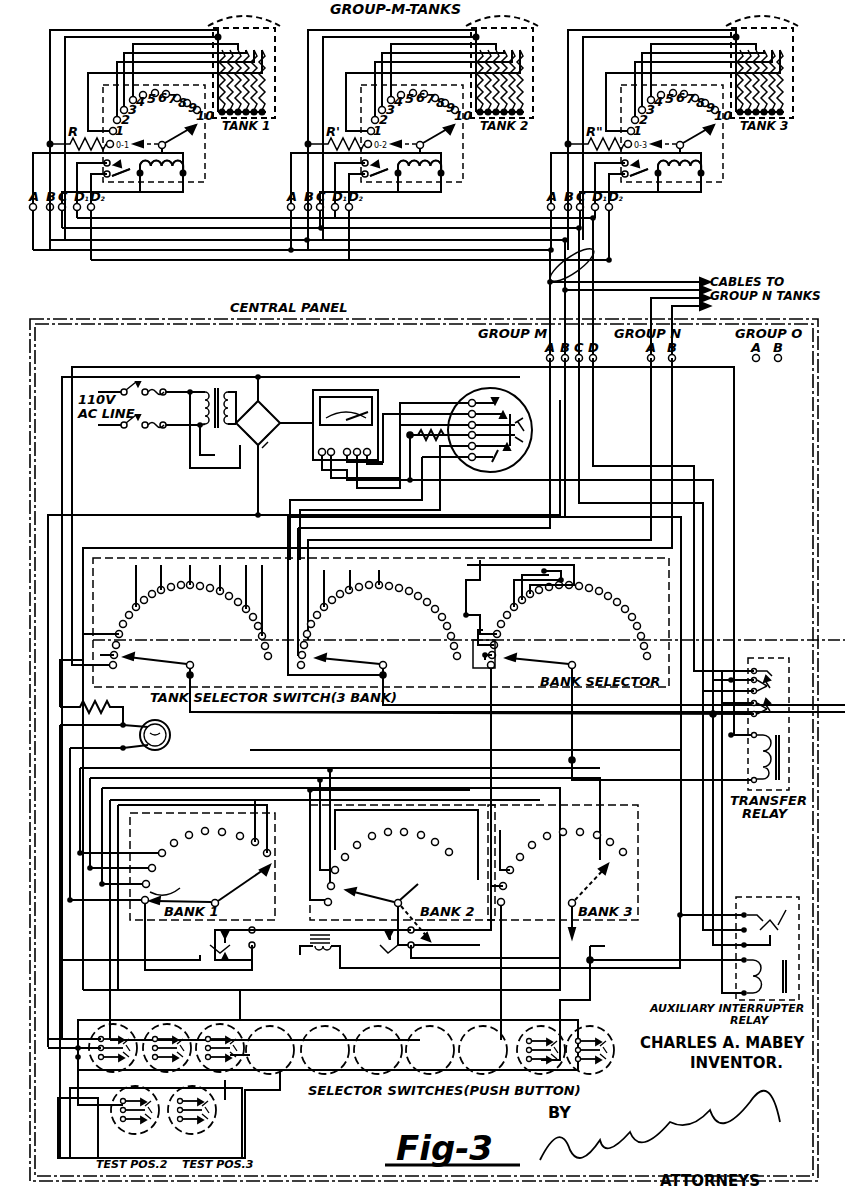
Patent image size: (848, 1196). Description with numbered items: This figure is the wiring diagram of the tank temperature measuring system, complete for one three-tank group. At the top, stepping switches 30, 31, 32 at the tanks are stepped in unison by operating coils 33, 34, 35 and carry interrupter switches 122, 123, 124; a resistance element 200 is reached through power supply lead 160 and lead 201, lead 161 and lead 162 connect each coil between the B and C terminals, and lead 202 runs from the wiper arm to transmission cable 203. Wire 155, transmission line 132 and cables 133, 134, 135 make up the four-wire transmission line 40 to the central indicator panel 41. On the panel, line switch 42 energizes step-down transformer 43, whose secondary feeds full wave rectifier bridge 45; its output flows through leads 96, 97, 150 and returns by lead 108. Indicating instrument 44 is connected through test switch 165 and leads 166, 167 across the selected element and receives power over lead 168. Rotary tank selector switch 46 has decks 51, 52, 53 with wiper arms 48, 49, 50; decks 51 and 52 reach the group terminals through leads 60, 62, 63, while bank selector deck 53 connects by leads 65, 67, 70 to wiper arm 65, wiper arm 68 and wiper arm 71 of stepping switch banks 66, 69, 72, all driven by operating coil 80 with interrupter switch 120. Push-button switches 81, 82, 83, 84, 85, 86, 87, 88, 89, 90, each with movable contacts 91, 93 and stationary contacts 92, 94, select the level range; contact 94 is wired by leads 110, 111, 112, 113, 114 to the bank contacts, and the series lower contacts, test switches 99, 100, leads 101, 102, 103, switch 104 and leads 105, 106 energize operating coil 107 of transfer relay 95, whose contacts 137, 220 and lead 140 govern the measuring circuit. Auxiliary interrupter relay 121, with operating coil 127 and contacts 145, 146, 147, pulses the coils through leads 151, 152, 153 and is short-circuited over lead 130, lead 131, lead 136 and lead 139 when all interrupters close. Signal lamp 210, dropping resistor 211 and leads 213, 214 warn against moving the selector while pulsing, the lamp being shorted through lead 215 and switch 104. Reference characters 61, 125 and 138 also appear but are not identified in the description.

The power supply lead 160 is at (32, 126).
The lead 161 is at (88, 121).
The stepping switch 30 is at (209, 129).
The stepping switch 31 is at (467, 129).
The stepping switch 32 is at (721, 138).
The operating coil 33 is at (190, 167).
The operating coil 34 is at (456, 167).
The operating coil 35 is at (714, 167).
The interrupter switch 122 is at (120, 178).
The interrupter switch 123 is at (370, 178).
The interrupter switch 124 is at (634, 178).
The lead 162 is at (186, 187).
The lead 201 is at (342, 82).
The resistance element 200 is at (516, 82).
The lead 202 is at (278, 178).
The transmission line 132 is at (254, 261).
The cable 133 is at (266, 217).
The cable 134 is at (476, 222).
The cable 135 is at (614, 218).
The four-wire transmission line 40 is at (586, 252).
The transmission cable 203 is at (548, 286).
The transmission cable 155 is at (560, 300).
The central indicator panel 41 is at (152, 318).
The lead 108 is at (244, 367).
The line switch 42 is at (136, 428).
The step-down transformer 43 is at (214, 430).
The indicating instrument 44 is at (274, 396).
The full wave rectifier bridge 45 is at (273, 433).
The test switch 165 is at (480, 402).
The lead 62 is at (552, 410).
The lead 136 is at (588, 390).
The lead 63 is at (651, 422).
The tank selector switch 61 is at (672, 416).
The lead 131 is at (688, 472).
The lead 97 is at (142, 510).
The lead 96 is at (258, 498).
The lead 167 is at (324, 494).
The power lead 168 is at (488, 482).
The lead 150 is at (488, 522).
The lead 166 is at (282, 547).
The lead 60 is at (76, 554).
The switch deck 51 is at (198, 623).
The switch deck 52 is at (388, 623).
The bank selector deck 53 is at (578, 623).
The wiper arm 48 is at (169, 648).
The wiper arm 49 is at (355, 660).
The wiper arm 50 is at (543, 660).
The rotary tank selector switch 46 is at (400, 688).
The lead 70 is at (470, 678).
The wiper arm 65 is at (492, 696).
The lead 214 is at (60, 700).
The dropping resistor 211 is at (96, 719).
The signal lamp 210 is at (174, 726).
The lead 213 is at (76, 760).
The lead 153 is at (404, 740).
The lead 67 is at (488, 752).
The lead 140 is at (562, 740).
The lead 105 is at (202, 838).
The lead 106 is at (626, 779).
The relay contact 138 is at (770, 654).
The lead 139 is at (738, 659).
The transfer relay 95 is at (754, 658).
The relay contact 137 is at (778, 683).
The relay contacts 220 is at (782, 715).
The operating coil 107 is at (786, 770).
The lead 152 is at (729, 895).
The lead 151 is at (732, 910).
The stationary contact 147 is at (770, 912).
The movable contact 145 is at (748, 906).
The stationary contact 146 is at (786, 910).
The auxiliary interrupter relay 121 is at (732, 970).
The operating coil 127 is at (732, 984).
The resistor 125 is at (624, 962).
The lead 130 is at (578, 980).
The lead 112 is at (122, 818).
The lead 113 is at (331, 796).
The lead 114 is at (480, 792).
The stepping switch 66 is at (214, 868).
The stepping switch 69 is at (398, 868).
The stepping switch 72 is at (570, 868).
The lead 111 is at (172, 884).
The wiper arm 68 is at (366, 899).
The wiper arm 71 is at (570, 914).
The lead 102 is at (128, 910).
The lead 103 is at (128, 946).
The off-normal switch 104 is at (254, 944).
The lead 215 is at (200, 964).
The operating coil 80 is at (328, 954).
The interrupter switch 120 is at (386, 936).
The lead 110 is at (104, 1003).
The stationary contact 94 is at (328, 1030).
The push-button switch 81 is at (88, 1034).
The push-button switch 82 is at (178, 1023).
The push-button switch 83 is at (236, 1022).
The push-button switch 84 is at (276, 1025).
The push-button switch 85 is at (331, 1025).
The push-button switch 86 is at (384, 1025).
The push-button switch 87 is at (436, 1025).
The push-button switch 88 is at (499, 1025).
The push-button switch 89 is at (552, 1025).
The push-button switch 90 is at (602, 1028).
The movable contact 93 is at (250, 1034).
The stationary contact 92 is at (252, 1047).
The movable contact 91 is at (232, 1077).
The test switch 99 is at (120, 1124).
The test switch 100 is at (196, 1132).
The lead 101 is at (68, 1076).